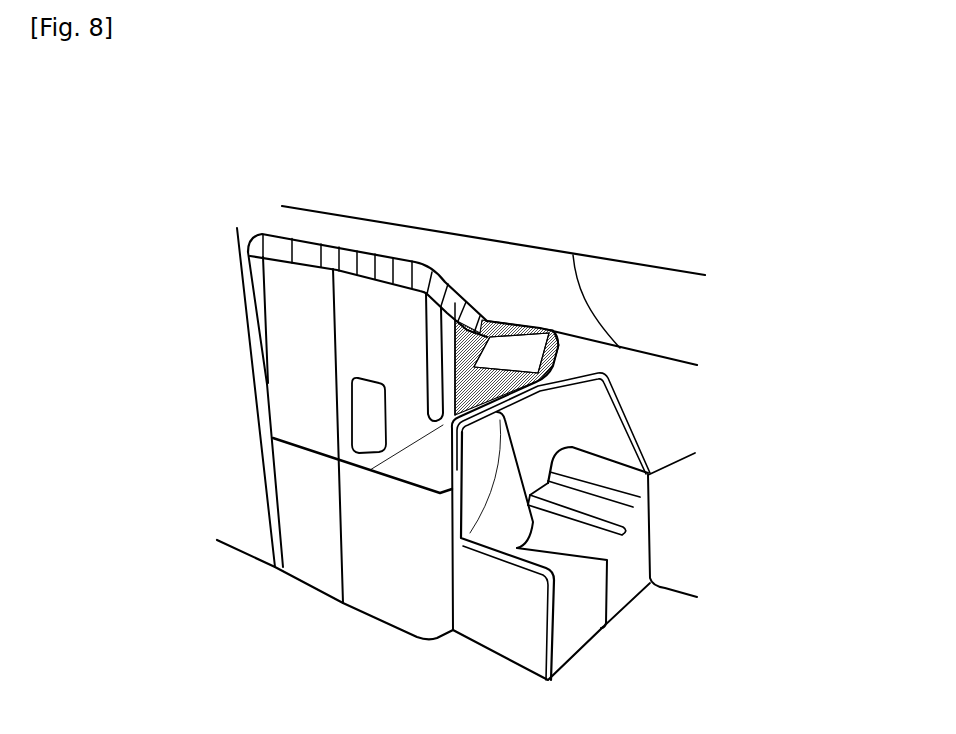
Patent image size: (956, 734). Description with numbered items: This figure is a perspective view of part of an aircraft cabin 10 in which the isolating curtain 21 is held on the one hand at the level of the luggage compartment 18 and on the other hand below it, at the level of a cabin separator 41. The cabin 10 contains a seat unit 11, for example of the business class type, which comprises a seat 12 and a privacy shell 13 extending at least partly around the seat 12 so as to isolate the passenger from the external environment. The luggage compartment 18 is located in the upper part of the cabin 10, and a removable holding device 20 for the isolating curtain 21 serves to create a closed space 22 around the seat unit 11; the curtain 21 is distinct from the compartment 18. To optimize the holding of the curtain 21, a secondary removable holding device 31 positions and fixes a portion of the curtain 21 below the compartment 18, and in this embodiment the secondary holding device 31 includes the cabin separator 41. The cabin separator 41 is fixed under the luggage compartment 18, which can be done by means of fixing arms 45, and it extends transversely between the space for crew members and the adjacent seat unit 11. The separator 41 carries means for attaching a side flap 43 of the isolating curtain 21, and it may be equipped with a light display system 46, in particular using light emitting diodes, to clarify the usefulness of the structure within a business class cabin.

The aircraft cabin 10 is at (190, 182).
The seat unit 11 is at (643, 417).
The seat 12 is at (500, 488).
The privacy shell 13 is at (568, 420).
The luggage compartment 18 is at (398, 243).
The removable holding device 20 is at (310, 252).
The isolating curtain 21 is at (300, 403).
The closed space 22 is at (315, 358).
The secondary removable holding device 31 is at (548, 331).
The cabin separator 41 is at (545, 330).
The side flap 43 is at (452, 532).
The fixing arms 45 is at (488, 320).
The light display system 46 is at (562, 378).